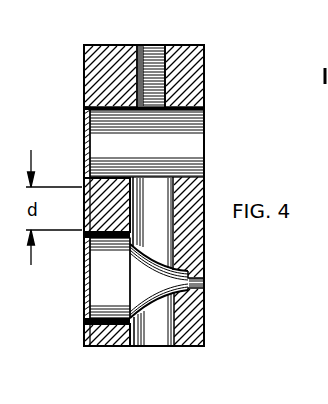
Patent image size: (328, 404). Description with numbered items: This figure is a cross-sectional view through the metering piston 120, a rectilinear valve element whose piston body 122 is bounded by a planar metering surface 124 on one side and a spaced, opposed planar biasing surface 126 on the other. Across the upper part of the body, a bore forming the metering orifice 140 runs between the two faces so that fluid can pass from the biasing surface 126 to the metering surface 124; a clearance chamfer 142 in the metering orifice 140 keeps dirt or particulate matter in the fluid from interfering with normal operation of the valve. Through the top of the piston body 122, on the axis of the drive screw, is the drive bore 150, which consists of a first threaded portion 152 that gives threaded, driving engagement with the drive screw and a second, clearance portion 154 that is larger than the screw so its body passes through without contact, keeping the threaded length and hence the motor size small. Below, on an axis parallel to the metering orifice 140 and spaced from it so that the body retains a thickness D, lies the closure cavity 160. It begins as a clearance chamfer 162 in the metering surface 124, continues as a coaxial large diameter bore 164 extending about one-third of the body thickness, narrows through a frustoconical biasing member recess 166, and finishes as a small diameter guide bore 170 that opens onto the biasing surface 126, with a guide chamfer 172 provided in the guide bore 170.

The metering piston 120 is at (183, 47).
The piston body 122 is at (112, 50).
The planar metering surface 124 is at (84, 82).
The planar biasing surface 126 is at (206, 68).
The metering orifice 140 is at (190, 131).
The clearance chamfer 142 is at (87, 117).
The drive bore 150 is at (148, 47).
The first threaded portion 152 is at (166, 96).
The clearance portion 154 is at (153, 185).
The closure cavity 160 is at (100, 292).
The clearance chamfer 162 is at (84, 320).
The large diameter bore 164 is at (102, 262).
The biasing member recess 166 is at (158, 312).
The guide bore 170 is at (197, 288).
The guide chamfer 172 is at (199, 274).